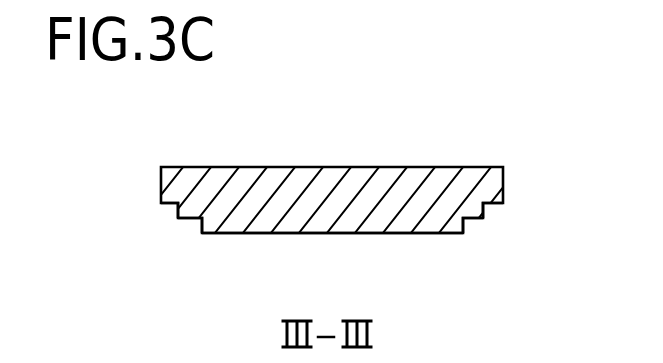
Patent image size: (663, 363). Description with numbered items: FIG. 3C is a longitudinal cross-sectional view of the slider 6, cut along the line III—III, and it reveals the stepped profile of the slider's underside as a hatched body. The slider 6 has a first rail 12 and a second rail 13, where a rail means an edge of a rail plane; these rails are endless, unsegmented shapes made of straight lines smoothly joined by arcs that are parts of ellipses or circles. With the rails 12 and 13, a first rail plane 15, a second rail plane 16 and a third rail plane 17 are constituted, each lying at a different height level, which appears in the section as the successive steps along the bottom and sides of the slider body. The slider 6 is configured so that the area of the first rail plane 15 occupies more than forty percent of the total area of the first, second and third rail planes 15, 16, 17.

The slider 6 is at (357, 151).
The first rail 12 is at (201, 233).
The second rail 13 is at (177, 219).
The first rail plane 15 is at (376, 234).
The second rail plane 16 is at (472, 220).
The third rail plane 17 is at (496, 206).